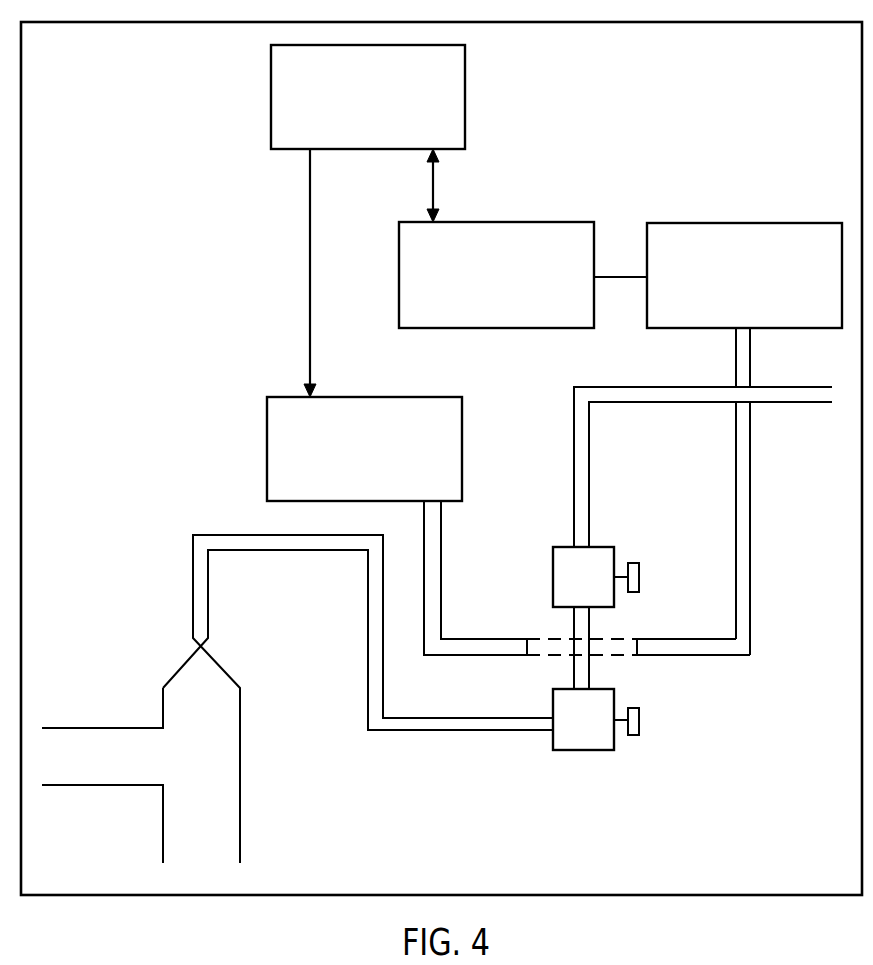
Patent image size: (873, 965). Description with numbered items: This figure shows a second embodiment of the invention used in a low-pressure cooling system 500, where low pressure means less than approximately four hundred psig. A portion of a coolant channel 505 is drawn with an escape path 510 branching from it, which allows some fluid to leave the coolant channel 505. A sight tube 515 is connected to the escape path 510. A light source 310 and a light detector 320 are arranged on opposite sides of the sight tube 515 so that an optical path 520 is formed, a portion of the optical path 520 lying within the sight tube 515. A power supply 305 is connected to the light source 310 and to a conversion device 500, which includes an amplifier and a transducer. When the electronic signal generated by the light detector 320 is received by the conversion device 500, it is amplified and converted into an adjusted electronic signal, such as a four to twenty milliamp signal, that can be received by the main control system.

The power supply 305 is at (368, 221).
The conversion device 500 is at (441, 458).
The light detector 320 is at (708, 439).
The light source 310 is at (397, 526).
The escape path 510 is at (249, 533).
The coolant channel 505 is at (109, 775).
The sight tube 515 is at (590, 673).
The optical path 520 is at (623, 642).